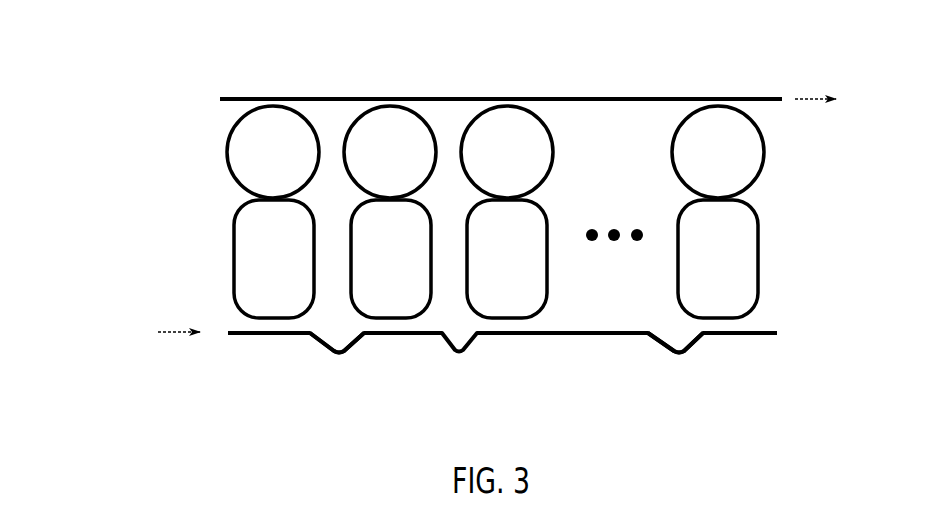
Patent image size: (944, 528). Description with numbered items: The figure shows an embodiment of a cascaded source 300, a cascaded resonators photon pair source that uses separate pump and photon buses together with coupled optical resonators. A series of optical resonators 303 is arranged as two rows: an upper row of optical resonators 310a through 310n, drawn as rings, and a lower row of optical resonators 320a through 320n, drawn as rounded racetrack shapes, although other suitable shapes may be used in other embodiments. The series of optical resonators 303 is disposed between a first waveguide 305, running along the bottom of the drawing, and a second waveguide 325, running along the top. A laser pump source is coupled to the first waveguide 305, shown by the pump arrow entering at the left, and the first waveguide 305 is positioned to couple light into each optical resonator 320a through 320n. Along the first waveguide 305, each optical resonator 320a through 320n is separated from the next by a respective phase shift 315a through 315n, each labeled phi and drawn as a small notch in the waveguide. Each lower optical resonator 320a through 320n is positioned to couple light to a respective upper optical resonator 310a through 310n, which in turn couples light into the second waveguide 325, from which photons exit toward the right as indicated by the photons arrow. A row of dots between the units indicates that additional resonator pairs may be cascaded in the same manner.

The cascaded source 300 is at (110, 57).
The series of optical resonators 303 is at (178, 185).
The first waveguide 305 is at (550, 335).
The optical resonator 310a is at (283, 107).
The optical resonator 310n is at (713, 105).
The phase shift 315a is at (339, 352).
The phase shift 315n is at (679, 353).
The optical resonator 320a is at (260, 318).
The optical resonator 320n is at (738, 319).
The second waveguide 325 is at (558, 99).